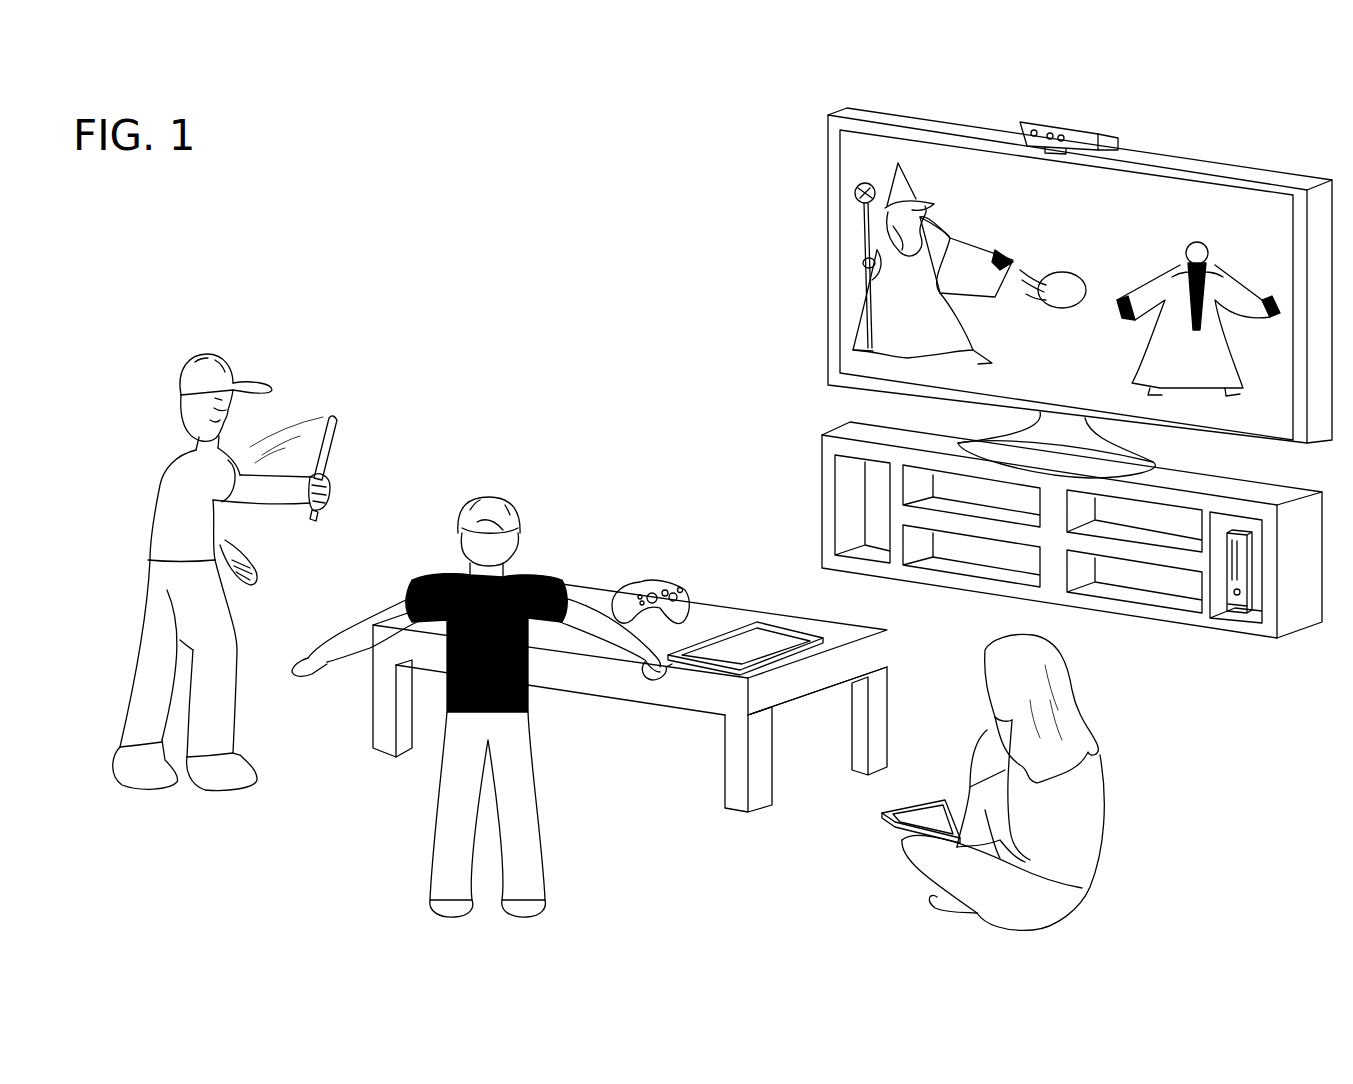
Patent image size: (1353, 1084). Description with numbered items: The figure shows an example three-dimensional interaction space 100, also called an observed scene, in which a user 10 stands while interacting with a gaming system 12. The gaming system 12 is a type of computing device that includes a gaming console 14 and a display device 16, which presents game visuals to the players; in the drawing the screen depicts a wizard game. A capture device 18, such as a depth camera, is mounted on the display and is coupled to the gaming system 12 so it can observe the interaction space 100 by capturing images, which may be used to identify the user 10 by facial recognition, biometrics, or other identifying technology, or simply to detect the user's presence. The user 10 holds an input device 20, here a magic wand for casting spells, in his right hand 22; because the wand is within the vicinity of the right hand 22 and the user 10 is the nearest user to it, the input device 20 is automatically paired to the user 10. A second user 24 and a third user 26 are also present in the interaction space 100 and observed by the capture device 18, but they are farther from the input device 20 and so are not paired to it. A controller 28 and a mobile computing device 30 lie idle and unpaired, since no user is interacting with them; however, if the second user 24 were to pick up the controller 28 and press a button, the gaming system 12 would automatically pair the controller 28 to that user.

The 3D interaction space 100 is at (360, 187).
The user 10 is at (173, 332).
The gaming system 12 is at (1258, 125).
The gaming console 14 is at (1248, 641).
The display device 16 is at (1279, 422).
The capture device 18 is at (1077, 126).
The input device 20 is at (335, 417).
The right hand 22 is at (318, 511).
The second user 24 is at (468, 471).
The third user 26 is at (1108, 692).
The controller 28 is at (675, 587).
The mobile computing device 30 is at (790, 623).